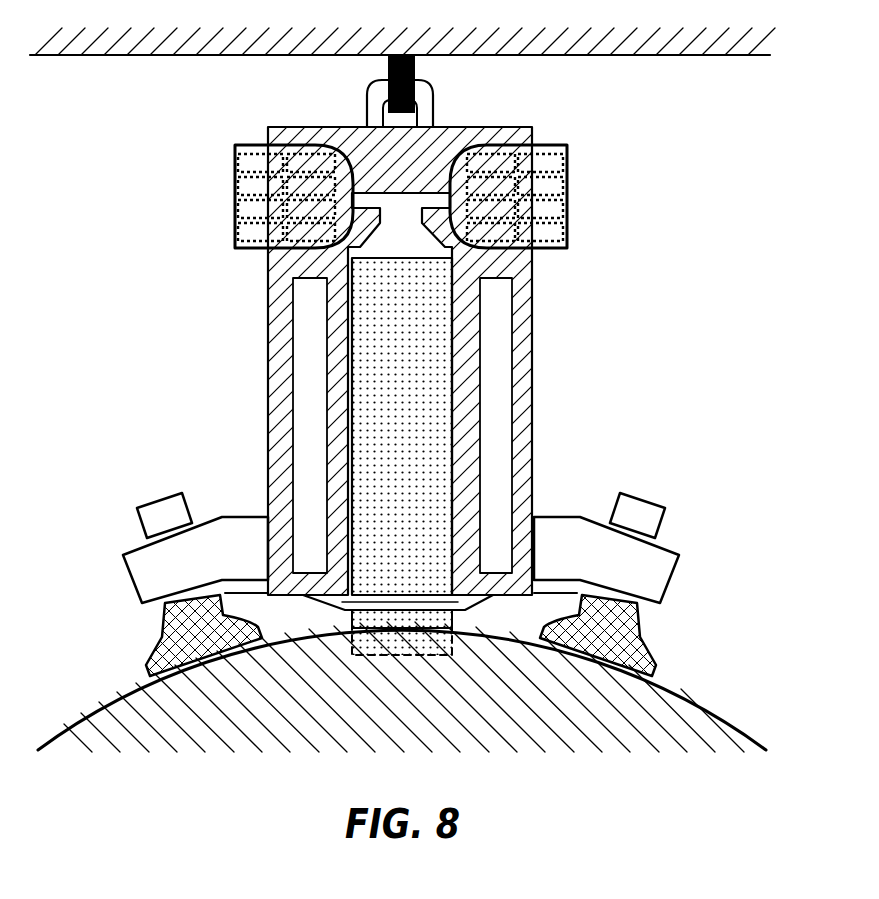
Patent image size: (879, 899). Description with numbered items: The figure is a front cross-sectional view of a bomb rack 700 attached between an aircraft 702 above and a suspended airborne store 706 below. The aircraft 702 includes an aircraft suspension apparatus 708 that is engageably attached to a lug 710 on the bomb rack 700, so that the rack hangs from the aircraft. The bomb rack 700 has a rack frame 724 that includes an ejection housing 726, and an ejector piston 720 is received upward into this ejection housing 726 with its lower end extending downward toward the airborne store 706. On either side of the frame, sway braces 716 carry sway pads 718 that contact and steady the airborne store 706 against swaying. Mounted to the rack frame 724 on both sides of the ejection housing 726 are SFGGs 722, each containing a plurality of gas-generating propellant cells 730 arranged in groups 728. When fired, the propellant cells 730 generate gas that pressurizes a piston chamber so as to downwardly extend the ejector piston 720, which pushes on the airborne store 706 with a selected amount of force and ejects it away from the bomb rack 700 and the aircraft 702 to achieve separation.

The bomb rack 700 is at (386, 391).
The aircraft 702 is at (637, 58).
The suspended airborne store 706 is at (728, 722).
The aircraft suspension apparatus 708 is at (388, 65).
The lug 710 is at (435, 100).
The sway brace 716 is at (237, 517).
The sway pad 718 is at (165, 640).
The ejector piston 720 is at (423, 338).
The SFGG 722 is at (423, 161).
The rack frame 724 is at (535, 392).
The ejection housing 726 is at (330, 428).
The cell group 728 is at (260, 215).
The gas-generating propellant cell 730 is at (305, 170).